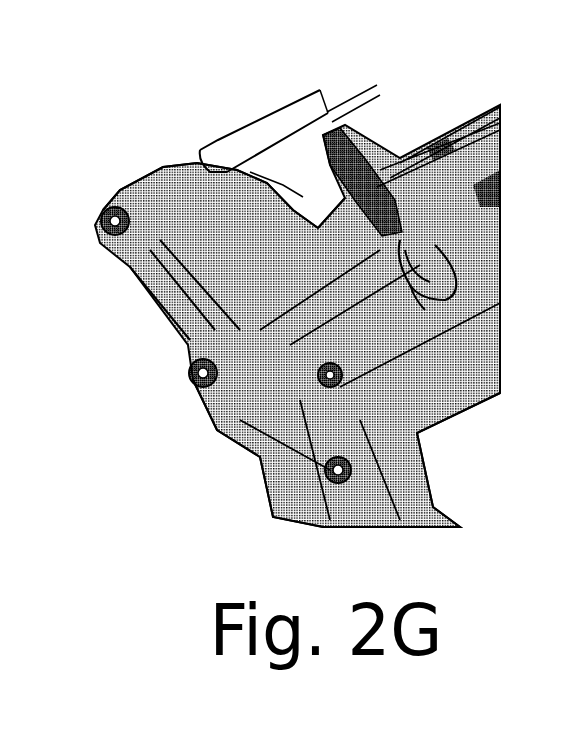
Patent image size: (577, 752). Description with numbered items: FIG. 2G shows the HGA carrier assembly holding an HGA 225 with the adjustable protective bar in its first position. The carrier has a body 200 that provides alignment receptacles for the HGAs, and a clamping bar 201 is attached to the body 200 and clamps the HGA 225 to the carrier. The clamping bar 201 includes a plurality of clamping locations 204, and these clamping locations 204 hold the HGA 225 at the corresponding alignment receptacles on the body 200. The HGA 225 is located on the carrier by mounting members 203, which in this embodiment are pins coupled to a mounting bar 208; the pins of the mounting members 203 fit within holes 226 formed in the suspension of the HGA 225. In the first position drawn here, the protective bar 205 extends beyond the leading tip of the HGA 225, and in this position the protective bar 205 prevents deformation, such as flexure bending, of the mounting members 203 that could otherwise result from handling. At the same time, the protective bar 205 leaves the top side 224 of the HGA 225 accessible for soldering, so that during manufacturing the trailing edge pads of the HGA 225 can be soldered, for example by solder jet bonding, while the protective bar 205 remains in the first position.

The body 200 is at (209, 251).
The clamping bar 201 is at (344, 388).
The mounting members 203 is at (348, 192).
The clamping locations 204 is at (414, 286).
The protective bar 205 is at (292, 100).
The mounting bar 208 is at (473, 120).
The top side 224 is at (347, 149).
The HGA 225 is at (330, 107).
The holes 226 is at (368, 203).